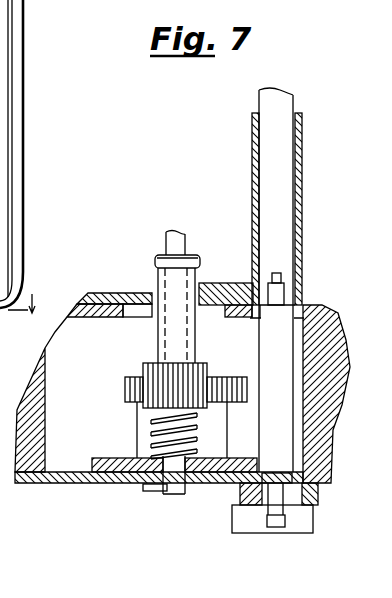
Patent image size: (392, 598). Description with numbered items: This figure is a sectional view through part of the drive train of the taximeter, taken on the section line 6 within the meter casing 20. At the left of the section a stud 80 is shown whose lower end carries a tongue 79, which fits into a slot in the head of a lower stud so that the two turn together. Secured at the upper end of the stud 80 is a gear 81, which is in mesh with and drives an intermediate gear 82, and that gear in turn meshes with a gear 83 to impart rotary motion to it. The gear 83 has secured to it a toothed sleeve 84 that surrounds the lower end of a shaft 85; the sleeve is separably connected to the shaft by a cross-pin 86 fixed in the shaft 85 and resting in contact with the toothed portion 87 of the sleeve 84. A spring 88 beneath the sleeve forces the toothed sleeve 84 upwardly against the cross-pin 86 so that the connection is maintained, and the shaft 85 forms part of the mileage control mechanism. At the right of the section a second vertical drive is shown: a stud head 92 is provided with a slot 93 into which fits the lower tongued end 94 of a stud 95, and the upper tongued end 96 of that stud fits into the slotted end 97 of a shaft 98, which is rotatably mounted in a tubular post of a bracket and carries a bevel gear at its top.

The section line 6 is at (28, 306).
The meter casing 20 is at (25, 158).
The tongue 79 is at (162, 495).
The stud 80 is at (150, 485).
The gear 81 is at (125, 390).
The intermediate gear 82 is at (223, 424).
The gear 83 is at (142, 409).
The toothed sleeve 84 is at (157, 343).
The shaft 85 is at (178, 246).
The cross-pin 86 is at (201, 262).
The toothed portion 87 is at (196, 258).
The spring 88 is at (152, 445).
The head 92 is at (314, 521).
The slot 93 is at (277, 528).
The lower tongued end 94 is at (272, 510).
The stud 95 is at (290, 450).
The upper tongued end 96 is at (278, 297).
The slotted end 97 is at (282, 278).
The shaft 98 is at (285, 223).